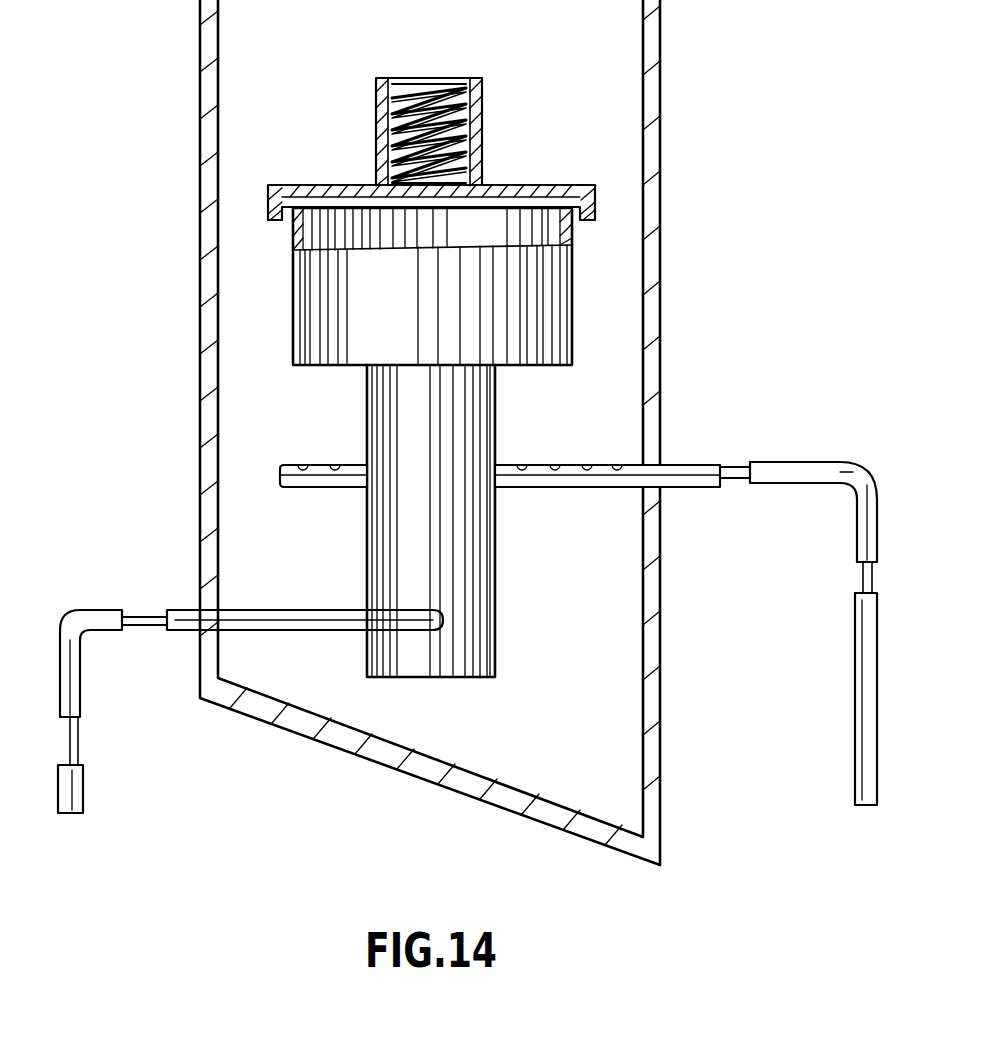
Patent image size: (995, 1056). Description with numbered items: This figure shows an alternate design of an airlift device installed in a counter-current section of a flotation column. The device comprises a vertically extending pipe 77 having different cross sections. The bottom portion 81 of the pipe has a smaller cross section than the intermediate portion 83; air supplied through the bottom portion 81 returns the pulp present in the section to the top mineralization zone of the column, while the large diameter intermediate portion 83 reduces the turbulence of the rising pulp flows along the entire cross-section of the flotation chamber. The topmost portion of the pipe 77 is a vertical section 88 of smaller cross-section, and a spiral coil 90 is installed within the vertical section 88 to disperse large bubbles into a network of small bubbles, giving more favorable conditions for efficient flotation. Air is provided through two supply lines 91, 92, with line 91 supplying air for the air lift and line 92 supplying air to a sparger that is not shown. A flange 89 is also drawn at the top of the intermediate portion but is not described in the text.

The vertically extending pipe 77 is at (528, 442).
The bottom portion 81 is at (497, 545).
The intermediate portion 83 is at (293, 337).
The vertical section 88 is at (376, 125).
The flange 89 is at (535, 185).
The spiral coil 90 is at (440, 78).
The supply line 91 is at (183, 610).
The supply line 92 is at (697, 465).